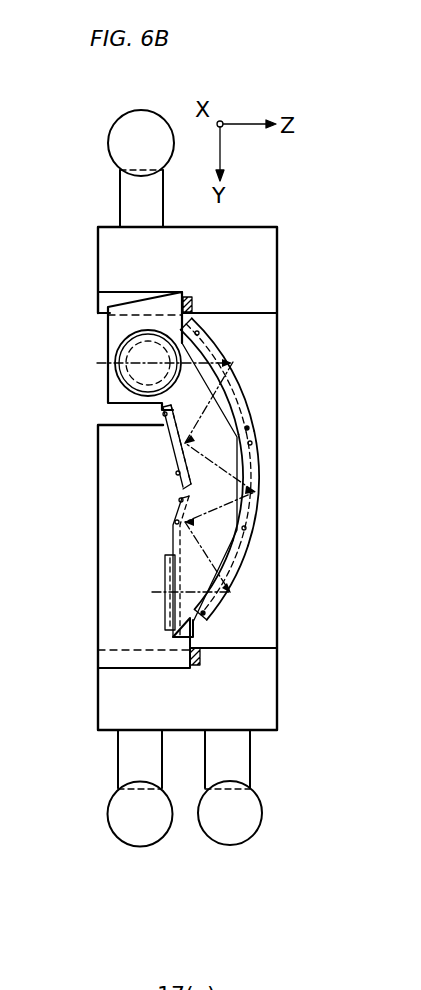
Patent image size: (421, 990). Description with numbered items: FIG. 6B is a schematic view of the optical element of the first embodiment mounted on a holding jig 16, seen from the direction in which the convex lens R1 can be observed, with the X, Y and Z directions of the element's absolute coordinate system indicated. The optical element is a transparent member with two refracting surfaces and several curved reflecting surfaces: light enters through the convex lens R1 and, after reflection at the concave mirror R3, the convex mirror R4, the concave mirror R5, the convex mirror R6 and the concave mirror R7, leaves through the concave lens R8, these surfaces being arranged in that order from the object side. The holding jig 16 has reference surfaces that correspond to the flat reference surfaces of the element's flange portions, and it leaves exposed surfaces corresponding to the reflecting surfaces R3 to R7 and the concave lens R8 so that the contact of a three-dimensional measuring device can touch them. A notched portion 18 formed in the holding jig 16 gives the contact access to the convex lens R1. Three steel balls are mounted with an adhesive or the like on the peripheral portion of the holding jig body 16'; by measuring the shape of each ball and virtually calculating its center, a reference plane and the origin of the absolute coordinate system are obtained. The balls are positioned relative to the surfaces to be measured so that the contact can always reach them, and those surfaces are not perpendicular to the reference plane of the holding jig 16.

The holding jig 16 is at (241, 478).
The holding jig body 16' is at (231, 675).
The notched portion 18 is at (127, 408).
The convex lens R1 is at (133, 360).
The concave mirror R3 is at (242, 392).
The convex mirror R4 is at (172, 448).
The concave mirror R5 is at (254, 476).
The convex mirror R6 is at (178, 500).
The concave mirror R7 is at (250, 552).
The concave lens R8 is at (162, 585).